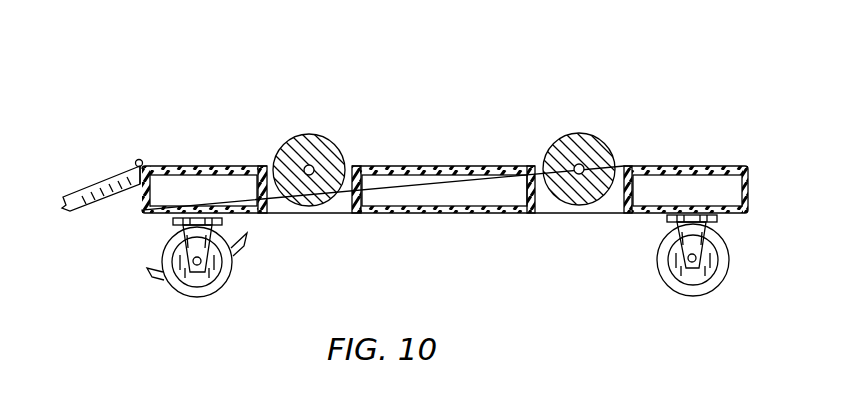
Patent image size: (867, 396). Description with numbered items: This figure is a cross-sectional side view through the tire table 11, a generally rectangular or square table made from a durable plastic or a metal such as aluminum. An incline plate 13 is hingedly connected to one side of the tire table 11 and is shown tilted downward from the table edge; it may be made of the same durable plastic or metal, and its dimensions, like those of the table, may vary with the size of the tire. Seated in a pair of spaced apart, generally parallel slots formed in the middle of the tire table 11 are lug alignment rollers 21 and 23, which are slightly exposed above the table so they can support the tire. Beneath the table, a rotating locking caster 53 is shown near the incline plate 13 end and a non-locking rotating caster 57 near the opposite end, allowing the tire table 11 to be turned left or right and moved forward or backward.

The tire table 11 is at (443, 165).
The incline plate 13 is at (93, 182).
The lug alignment roller 21 is at (310, 135).
The lug alignment roller 23 is at (580, 133).
The rotating locking caster 53 is at (213, 272).
The non-locking rotating caster 57 is at (705, 275).